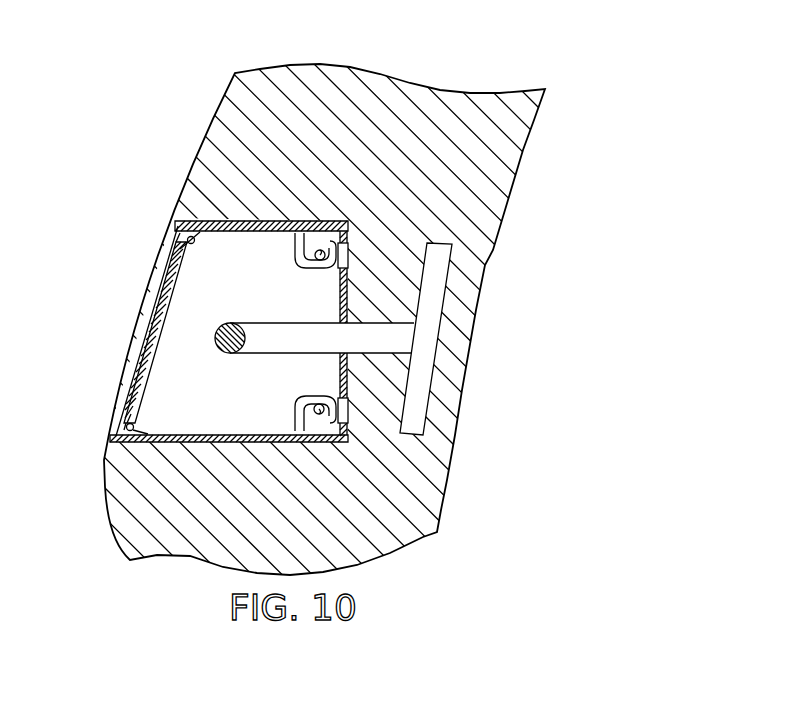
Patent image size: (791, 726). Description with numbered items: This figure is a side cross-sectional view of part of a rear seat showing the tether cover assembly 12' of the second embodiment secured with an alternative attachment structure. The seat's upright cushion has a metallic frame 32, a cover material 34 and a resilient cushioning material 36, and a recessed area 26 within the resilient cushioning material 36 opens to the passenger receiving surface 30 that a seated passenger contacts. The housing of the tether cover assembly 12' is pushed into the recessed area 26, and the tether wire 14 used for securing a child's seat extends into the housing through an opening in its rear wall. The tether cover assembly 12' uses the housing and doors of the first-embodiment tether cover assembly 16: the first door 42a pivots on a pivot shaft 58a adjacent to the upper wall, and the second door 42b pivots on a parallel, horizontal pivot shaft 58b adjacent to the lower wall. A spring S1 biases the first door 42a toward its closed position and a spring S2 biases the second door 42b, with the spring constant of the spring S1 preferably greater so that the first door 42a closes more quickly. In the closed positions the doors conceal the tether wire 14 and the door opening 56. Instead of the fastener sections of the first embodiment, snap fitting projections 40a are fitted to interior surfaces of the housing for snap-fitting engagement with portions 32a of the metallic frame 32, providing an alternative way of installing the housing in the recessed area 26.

The tether cover assembly 12' is at (606, 151).
The tether wire 14 is at (262, 342).
The tether cover assembly 16 is at (284, 214).
The recessed area 26 is at (147, 305).
The passenger receiving surface 30 is at (225, 105).
The metallic frame 32 is at (437, 272).
The portions of the metallic frame 32a is at (318, 262).
The cover material 34 is at (118, 543).
The resilient cushioning material 36 is at (357, 120).
The snap fitting projections 40a is at (300, 250).
The first door 42a is at (168, 272).
The second door 42b is at (150, 346).
The door opening 56 is at (138, 378).
The pivot shaft 58a is at (174, 229).
The pivot shaft 58b is at (125, 421).
The spring S1 is at (197, 238).
The spring S2 is at (142, 425).